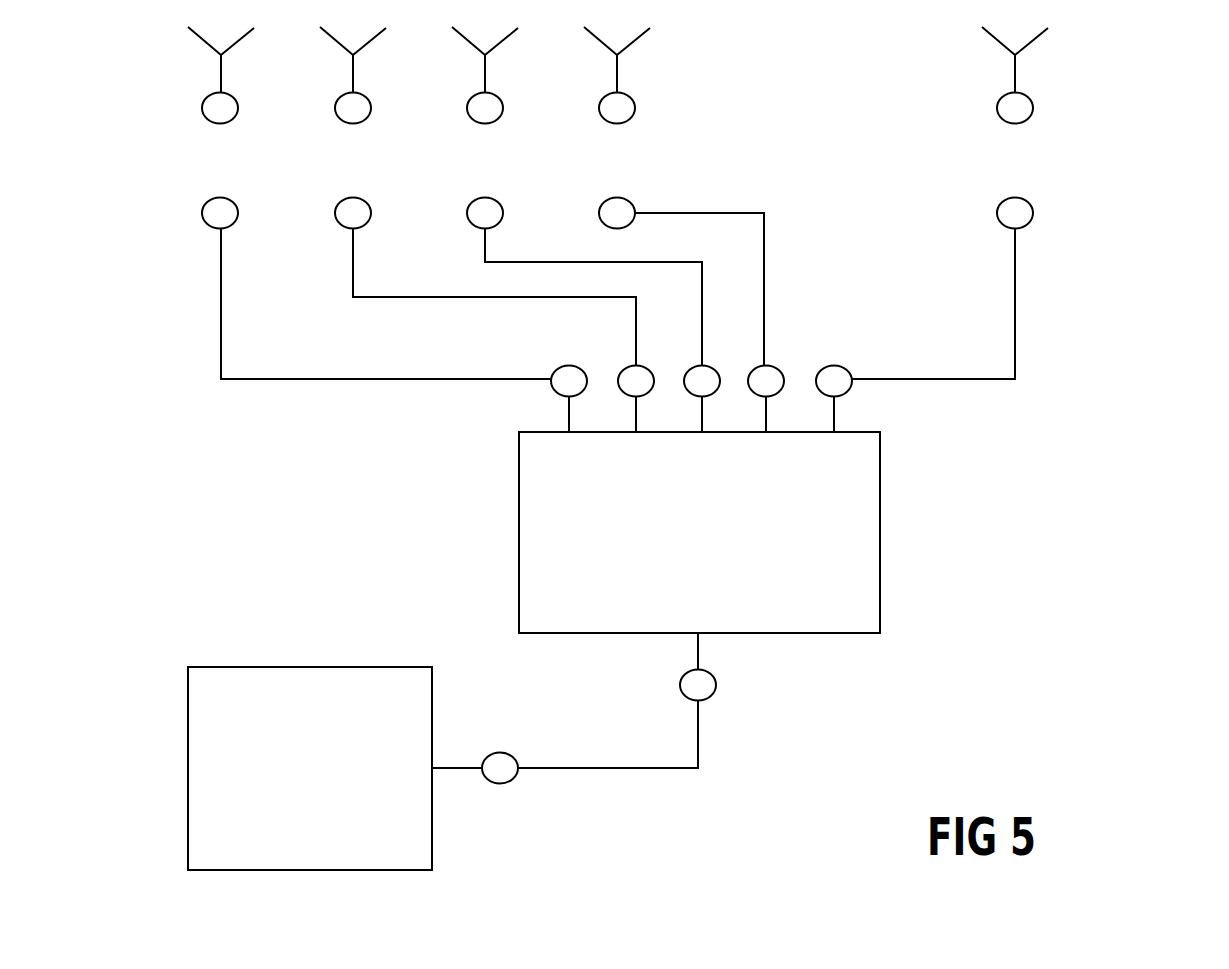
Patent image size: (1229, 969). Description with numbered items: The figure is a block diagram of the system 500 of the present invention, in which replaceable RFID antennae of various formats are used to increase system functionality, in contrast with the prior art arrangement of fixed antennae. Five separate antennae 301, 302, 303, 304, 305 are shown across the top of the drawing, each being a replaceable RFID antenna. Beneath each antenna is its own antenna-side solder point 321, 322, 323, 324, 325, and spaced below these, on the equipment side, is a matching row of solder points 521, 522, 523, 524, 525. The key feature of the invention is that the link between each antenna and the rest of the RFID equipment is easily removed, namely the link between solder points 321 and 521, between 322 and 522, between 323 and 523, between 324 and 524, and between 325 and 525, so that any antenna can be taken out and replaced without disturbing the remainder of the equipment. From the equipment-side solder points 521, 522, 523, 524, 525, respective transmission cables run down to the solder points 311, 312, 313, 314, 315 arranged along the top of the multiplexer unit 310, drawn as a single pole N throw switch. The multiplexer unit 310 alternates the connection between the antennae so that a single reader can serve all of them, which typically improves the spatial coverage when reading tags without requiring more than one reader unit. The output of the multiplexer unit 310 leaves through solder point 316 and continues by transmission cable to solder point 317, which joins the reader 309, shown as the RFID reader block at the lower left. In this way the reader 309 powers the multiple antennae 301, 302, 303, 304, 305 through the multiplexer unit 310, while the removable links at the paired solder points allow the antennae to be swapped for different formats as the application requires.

The antenna 301 is at (218, 89).
The antenna 302 is at (350, 87).
The antenna 303 is at (483, 84).
The antenna 304 is at (615, 84).
The antenna 305 is at (1013, 84).
The solder point 321 is at (238, 107).
The solder point 322 is at (371, 107).
The solder point 323 is at (503, 109).
The solder point 324 is at (632, 95).
The solder point 325 is at (1033, 109).
The solder point 521 is at (238, 213).
The solder point 522 is at (371, 212).
The solder point 523 is at (503, 214).
The solder point 524 is at (632, 198).
The solder point 525 is at (1034, 215).
The solder point 311 is at (587, 375).
The solder point 312 is at (653, 374).
The solder point 313 is at (720, 380).
The solder point 314 is at (785, 378).
The solder point 315 is at (846, 371).
The multiplexer unit 310 is at (519, 498).
The solder point 316 is at (717, 683).
The solder point 317 is at (500, 784).
The reader 309 is at (432, 745).
The system 500 is at (1079, 541).